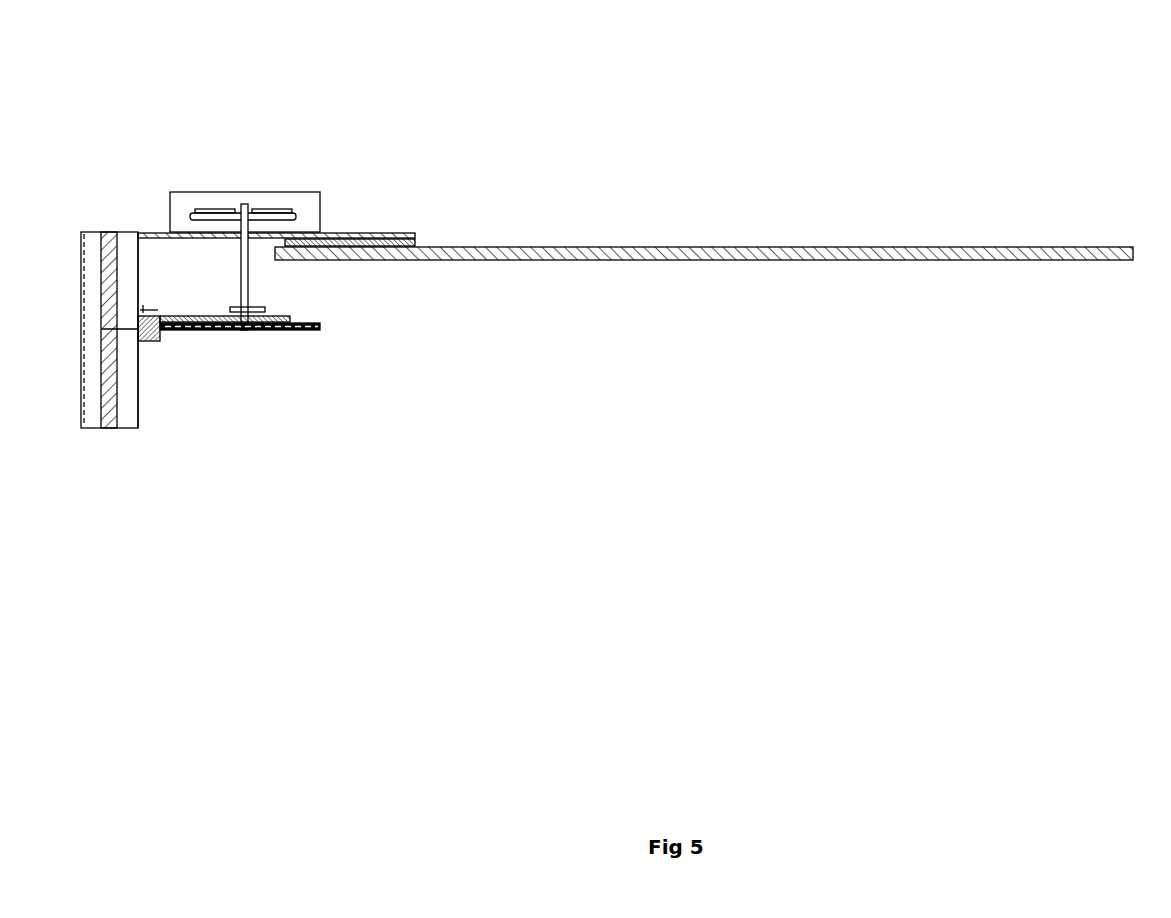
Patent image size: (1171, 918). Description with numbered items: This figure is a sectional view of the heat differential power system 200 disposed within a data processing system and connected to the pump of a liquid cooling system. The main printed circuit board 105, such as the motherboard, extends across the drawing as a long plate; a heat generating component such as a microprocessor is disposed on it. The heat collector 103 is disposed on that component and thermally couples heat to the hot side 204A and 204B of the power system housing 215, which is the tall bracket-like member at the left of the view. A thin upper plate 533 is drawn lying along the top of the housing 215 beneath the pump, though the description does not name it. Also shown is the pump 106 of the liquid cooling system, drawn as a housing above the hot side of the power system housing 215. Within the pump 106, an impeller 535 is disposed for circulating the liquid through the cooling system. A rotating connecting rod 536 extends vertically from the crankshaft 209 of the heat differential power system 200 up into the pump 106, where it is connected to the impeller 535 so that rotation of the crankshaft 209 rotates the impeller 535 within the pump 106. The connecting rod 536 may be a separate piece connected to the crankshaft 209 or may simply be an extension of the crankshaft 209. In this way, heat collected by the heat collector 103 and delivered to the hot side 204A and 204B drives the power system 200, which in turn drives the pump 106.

The heat differential power system 200 is at (620, 75).
The power system housing 215 is at (130, 231).
The hot side 204A is at (139, 252).
The hot side 204B is at (139, 376).
The pump 106 is at (224, 191).
The impeller 535 is at (297, 217).
The upper plate 533 is at (377, 233).
The heat collector 103 is at (417, 232).
The main printed circuit board 105 is at (662, 261).
The rotating connecting rod 536 is at (249, 270).
The crankshaft 209 is at (245, 332).